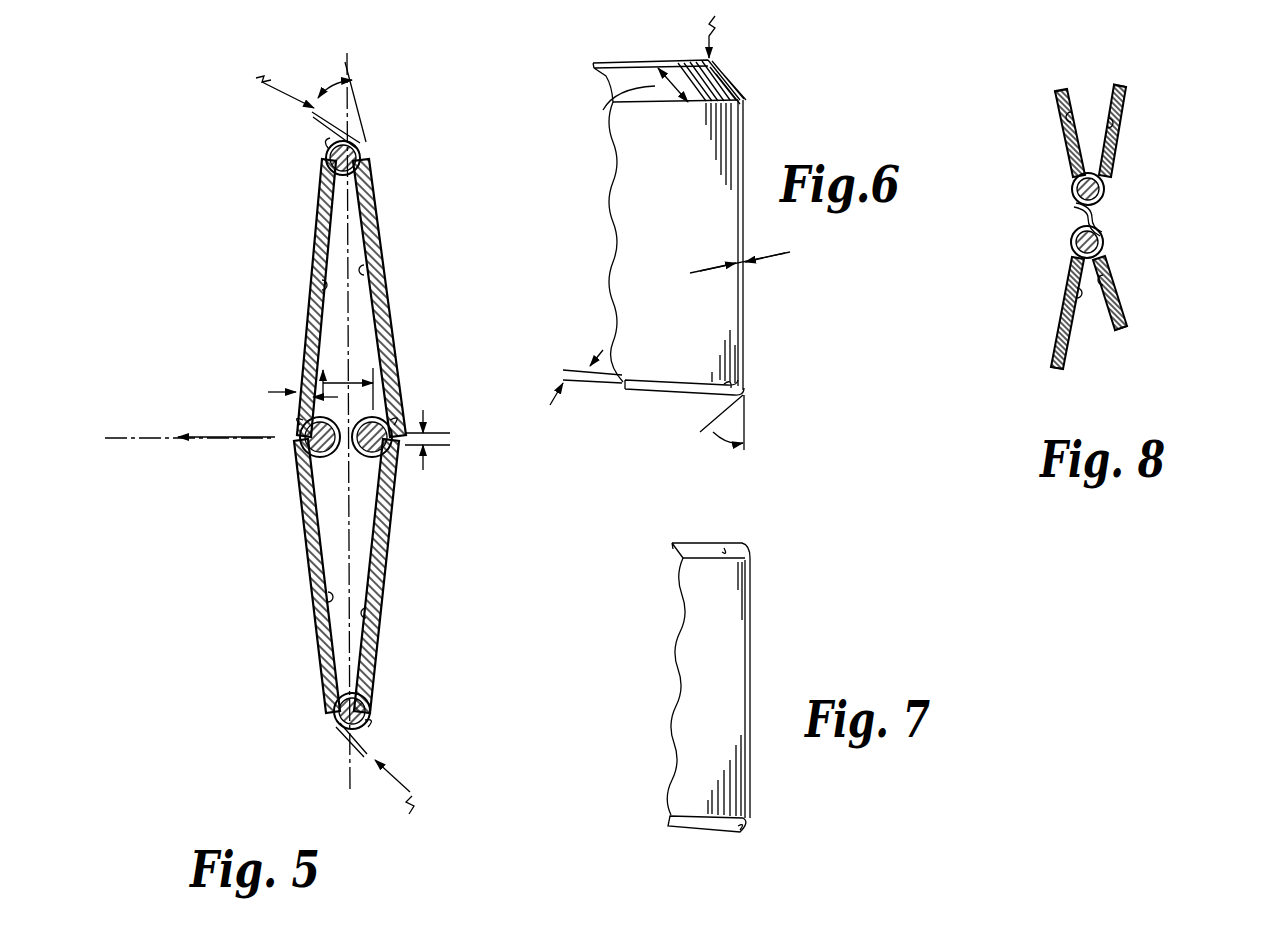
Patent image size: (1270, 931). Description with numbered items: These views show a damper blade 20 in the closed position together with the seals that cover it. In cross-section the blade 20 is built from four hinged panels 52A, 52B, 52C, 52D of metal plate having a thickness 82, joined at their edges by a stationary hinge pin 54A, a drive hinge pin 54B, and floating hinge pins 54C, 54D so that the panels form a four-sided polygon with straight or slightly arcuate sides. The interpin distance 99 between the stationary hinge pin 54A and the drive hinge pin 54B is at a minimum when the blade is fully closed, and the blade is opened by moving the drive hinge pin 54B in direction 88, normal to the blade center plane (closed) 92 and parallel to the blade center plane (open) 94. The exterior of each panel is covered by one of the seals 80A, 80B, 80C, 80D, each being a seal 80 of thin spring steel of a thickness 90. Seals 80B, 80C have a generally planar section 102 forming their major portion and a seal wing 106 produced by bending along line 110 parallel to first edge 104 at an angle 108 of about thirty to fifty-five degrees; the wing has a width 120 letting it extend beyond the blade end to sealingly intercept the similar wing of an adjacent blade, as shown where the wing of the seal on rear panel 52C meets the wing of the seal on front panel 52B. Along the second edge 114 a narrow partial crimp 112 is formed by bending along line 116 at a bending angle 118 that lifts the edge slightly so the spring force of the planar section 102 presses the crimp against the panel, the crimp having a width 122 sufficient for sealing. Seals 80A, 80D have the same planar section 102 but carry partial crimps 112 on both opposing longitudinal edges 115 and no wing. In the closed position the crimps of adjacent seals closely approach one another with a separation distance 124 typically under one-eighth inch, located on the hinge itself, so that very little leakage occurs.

In FIG. 5, the damper blade 20 is at (236, 183).
In FIG. 5, the panel 52A is at (371, 614).
In FIG. 8, the panel 52A is at (1118, 122).
In FIG. 5, the panel 52B is at (368, 270).
In FIG. 8, the panel 52B is at (1117, 285).
In FIG. 5, the panel 52C is at (328, 600).
In FIG. 8, the panel 52C is at (1071, 120).
In FIG. 5, the panel 52D is at (310, 288).
In FIG. 8, the panel 52D is at (1068, 295).
In FIG. 5, the stationary hinge pin 54A is at (380, 470).
In FIG. 5, the drive hinge pin 54B is at (294, 450).
In FIG. 5, the floating hinge pin 54C is at (372, 705).
In FIG. 8, the floating hinge pin 54C is at (1106, 195).
In FIG. 5, the floating hinge pin 54D is at (325, 175).
In FIG. 8, the floating hinge pin 54D is at (1075, 232).
In FIG. 8, the seal 80 is at (1100, 226).
In FIG. 5, the seal 80A is at (393, 543).
In FIG. 7, the seal 80A is at (760, 556).
In FIG. 8, the seal 80A is at (1116, 152).
In FIG. 5, the seal 80B is at (388, 238).
In FIG. 6, the seal 80B is at (732, 60).
In FIG. 8, the seal 80B is at (1124, 316).
In FIG. 5, the seal 80C is at (300, 530).
In FIG. 6, the seal 80C is at (846, 54).
In FIG. 8, the seal 80C is at (1062, 150).
In FIG. 5, the seal 80D is at (312, 232).
In FIG. 7, the seal 80D is at (829, 545).
In FIG. 8, the seal 80D is at (1058, 322).
In FIG. 5, the panel thickness 82 is at (280, 390).
In FIG. 5, the direction 88 is at (230, 440).
In FIG. 6, the seal thickness 90 is at (783, 257).
In FIG. 5, the blade center plane (closed) 92 is at (350, 64).
In FIG. 5, the blade center plane (open) 94 is at (140, 437).
In FIG. 5, the interpin distance 99 is at (323, 370).
In FIG. 6, the planar section 102 is at (703, 201).
In FIG. 7, the planar section 102 is at (719, 667).
In FIG. 5, the first edge 104 is at (326, 454).
In FIG. 6, the first edge 104 is at (686, 35).
In FIG. 5, the seal wing 106 is at (325, 122).
In FIG. 6, the seal wing 106 is at (735, 97).
In FIG. 8, the seal wing 106 is at (1078, 222).
In FIG. 5, the bend angle 108 is at (342, 76).
In FIG. 6, the bend line 110 is at (655, 102).
In FIG. 5, the partial crimp 112 is at (329, 146).
In FIG. 6, the partial crimp 112 is at (724, 384).
In FIG. 7, the partial crimp 112 is at (723, 552).
In FIG. 6, the second edge 114 is at (630, 393).
In FIG. 7, the longitudinal edges 115 is at (685, 545).
In FIG. 6, the crimp bend line 116 is at (712, 380).
In FIG. 7, the crimp bend line 116 is at (710, 562).
In FIG. 6, the crimp bending angle 118 is at (713, 440).
In FIG. 6, the seal wing width 120 is at (606, 108).
In FIG. 6, the partial crimp width 122 is at (586, 396).
In FIG. 5, the separation distance 124 is at (432, 412).